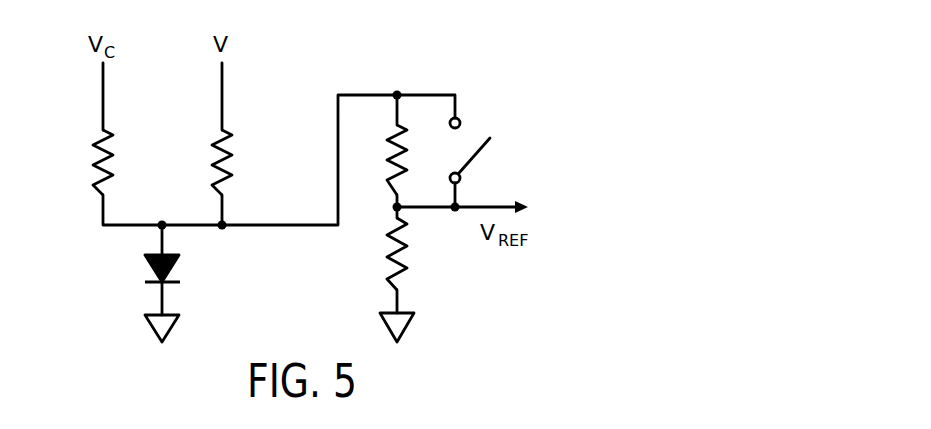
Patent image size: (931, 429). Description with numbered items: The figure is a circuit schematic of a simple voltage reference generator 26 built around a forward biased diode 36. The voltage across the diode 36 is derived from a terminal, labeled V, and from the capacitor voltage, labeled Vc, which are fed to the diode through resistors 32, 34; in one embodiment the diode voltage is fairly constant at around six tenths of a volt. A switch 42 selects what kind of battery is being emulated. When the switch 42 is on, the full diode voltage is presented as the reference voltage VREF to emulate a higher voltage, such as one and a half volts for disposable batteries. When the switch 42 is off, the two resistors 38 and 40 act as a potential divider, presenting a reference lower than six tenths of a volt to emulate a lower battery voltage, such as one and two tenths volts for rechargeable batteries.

The voltage reference generator 26 is at (519, 59).
The resistor 32 is at (103, 156).
The resistor 34 is at (222, 156).
The forward biased diode 36 is at (156, 268).
The resistor 38 is at (395, 152).
The resistor 40 is at (395, 248).
The switch 42 is at (472, 155).